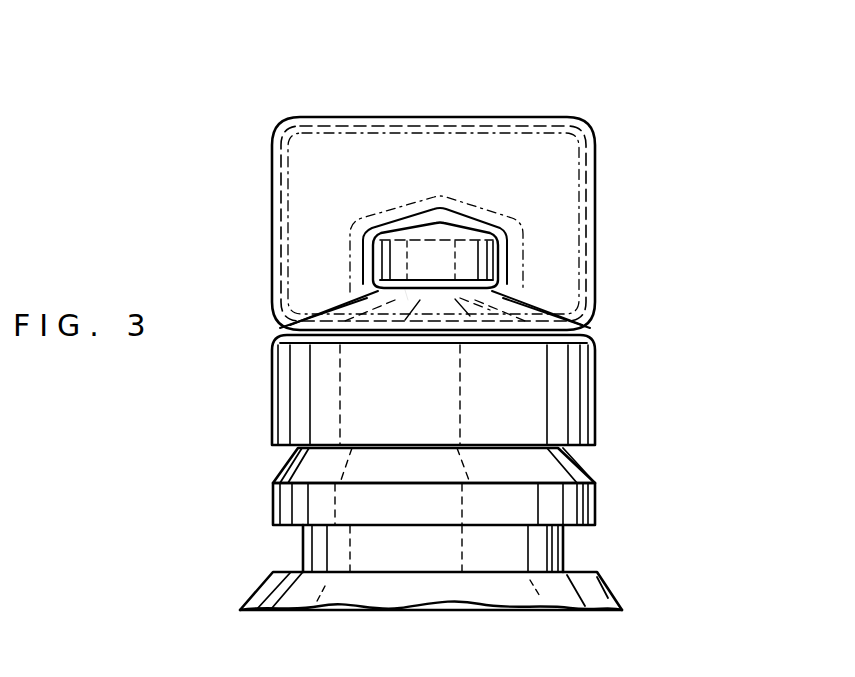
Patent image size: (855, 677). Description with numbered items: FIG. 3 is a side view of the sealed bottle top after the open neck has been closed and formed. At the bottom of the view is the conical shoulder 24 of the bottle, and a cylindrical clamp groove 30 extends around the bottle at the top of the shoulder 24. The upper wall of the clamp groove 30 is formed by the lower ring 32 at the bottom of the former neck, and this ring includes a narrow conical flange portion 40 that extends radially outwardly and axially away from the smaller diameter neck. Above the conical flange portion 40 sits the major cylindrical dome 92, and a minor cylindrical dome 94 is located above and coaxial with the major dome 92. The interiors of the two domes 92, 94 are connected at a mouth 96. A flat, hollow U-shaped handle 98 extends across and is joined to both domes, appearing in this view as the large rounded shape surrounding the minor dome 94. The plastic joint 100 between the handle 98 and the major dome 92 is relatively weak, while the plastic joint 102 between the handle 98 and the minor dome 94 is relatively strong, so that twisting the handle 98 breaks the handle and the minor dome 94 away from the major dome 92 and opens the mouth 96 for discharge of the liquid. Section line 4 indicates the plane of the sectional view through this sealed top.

The section line 4- 4 is at (181, 640).
The conical shoulder 24 is at (613, 588).
The clamp groove 30 is at (562, 550).
The lower ring 32 is at (272, 507).
The conical flange portion 40 is at (593, 477).
The major cylindrical dome 92 is at (595, 390).
The minor cylindrical dome 94 is at (375, 250).
The mouth 96 is at (412, 290).
The handle 98 is at (597, 180).
The plastic joint 100 is at (547, 307).
The plastic joint 102 is at (462, 220).